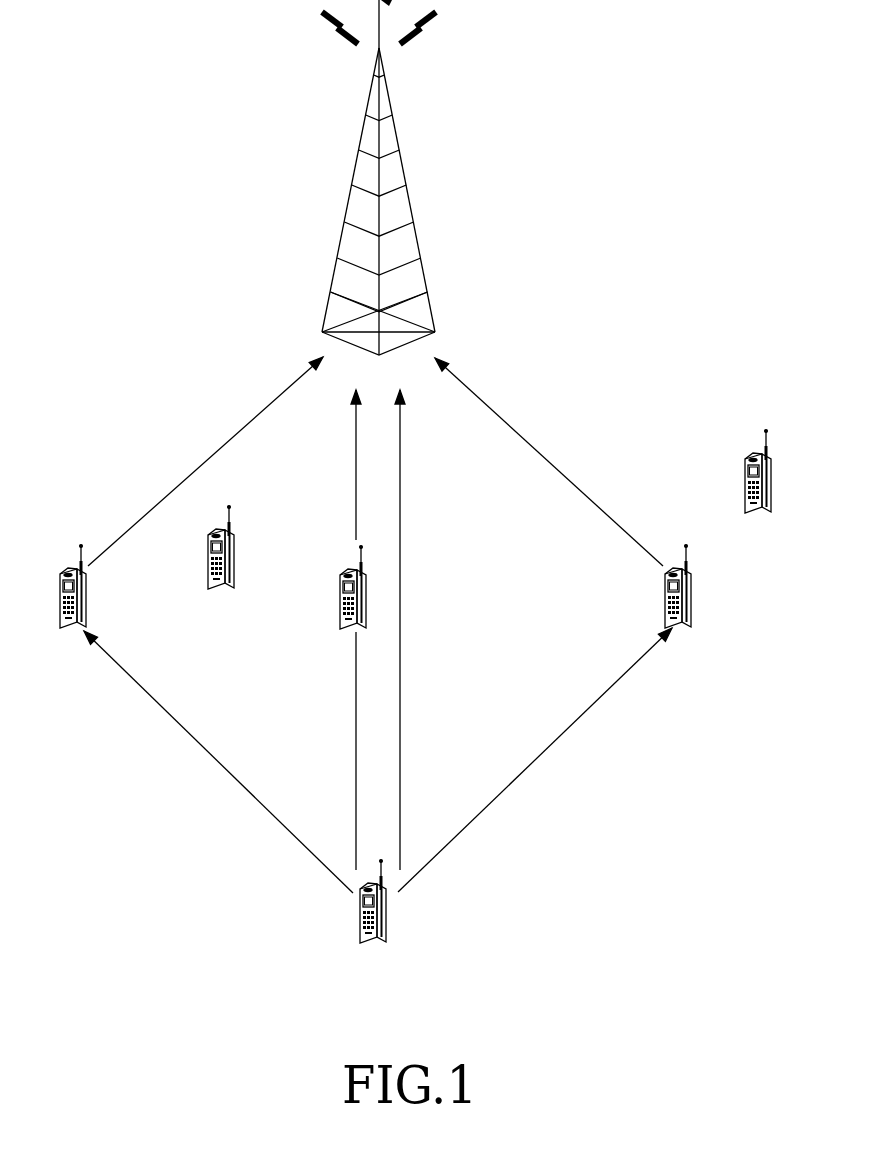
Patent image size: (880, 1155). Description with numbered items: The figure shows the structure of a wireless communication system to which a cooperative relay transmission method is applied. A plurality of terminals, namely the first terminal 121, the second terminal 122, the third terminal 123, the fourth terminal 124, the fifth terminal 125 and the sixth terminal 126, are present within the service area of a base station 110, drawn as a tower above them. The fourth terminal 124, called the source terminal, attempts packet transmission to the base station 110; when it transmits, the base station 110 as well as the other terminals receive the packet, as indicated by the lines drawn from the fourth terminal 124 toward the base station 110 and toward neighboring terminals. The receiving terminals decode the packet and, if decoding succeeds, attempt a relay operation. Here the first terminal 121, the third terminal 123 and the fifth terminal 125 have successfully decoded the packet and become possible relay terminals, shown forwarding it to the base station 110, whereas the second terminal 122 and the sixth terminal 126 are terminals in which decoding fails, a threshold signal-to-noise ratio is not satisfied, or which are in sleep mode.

The base station 110 is at (409, 200).
The Terminal #1 121 is at (86, 600).
The Terminal #2 122 is at (234, 560).
The Terminal #3 123 is at (340, 618).
The Terminal #4 124 is at (388, 918).
The Terminal #5 125 is at (691, 602).
The Terminal #6 126 is at (772, 488).